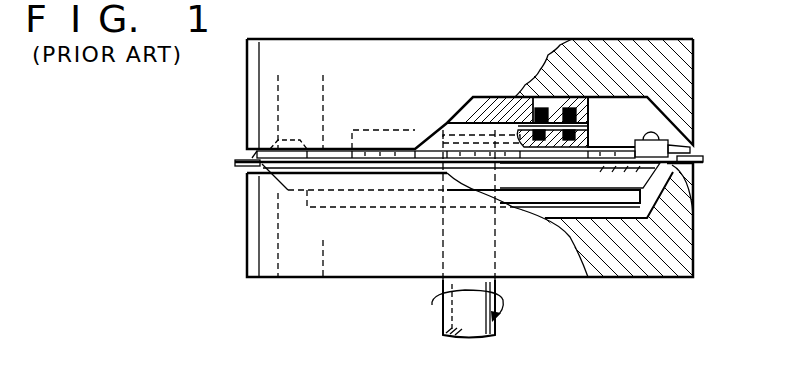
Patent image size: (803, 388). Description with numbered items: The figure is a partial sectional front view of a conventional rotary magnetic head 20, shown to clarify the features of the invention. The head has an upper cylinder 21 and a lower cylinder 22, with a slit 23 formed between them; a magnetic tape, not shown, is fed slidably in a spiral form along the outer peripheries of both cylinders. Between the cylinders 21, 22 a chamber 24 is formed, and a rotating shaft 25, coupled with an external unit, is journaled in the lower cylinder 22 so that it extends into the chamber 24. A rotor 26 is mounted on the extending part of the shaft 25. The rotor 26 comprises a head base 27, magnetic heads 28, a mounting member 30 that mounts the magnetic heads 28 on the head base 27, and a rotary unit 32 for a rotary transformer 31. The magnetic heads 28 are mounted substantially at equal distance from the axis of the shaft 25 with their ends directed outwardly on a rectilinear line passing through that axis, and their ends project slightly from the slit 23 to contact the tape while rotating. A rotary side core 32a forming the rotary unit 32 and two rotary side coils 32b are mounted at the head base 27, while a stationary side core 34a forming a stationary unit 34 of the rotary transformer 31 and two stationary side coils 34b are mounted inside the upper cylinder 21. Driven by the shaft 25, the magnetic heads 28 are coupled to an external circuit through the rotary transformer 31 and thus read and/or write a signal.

The rotary magnetic head 20 is at (657, 25).
The upper cylinder 21 is at (681, 70).
The lower cylinder 22 is at (675, 262).
The slit 23 is at (694, 195).
The chamber 24 is at (652, 117).
The rotating shaft 25 is at (498, 320).
The rotor 26 is at (648, 205).
The head base 27 is at (650, 212).
The magnetic heads 28 is at (700, 163).
The mounting member 30 is at (687, 147).
The rotary transformer 31 is at (445, 108).
The rotary unit 32 is at (433, 153).
The rotary side core 32a is at (386, 150).
The rotary side coils 32b is at (560, 140).
The stationary unit 34 is at (566, 86).
The stationary side core 34a is at (488, 107).
The stationary side coils 34b is at (533, 100).